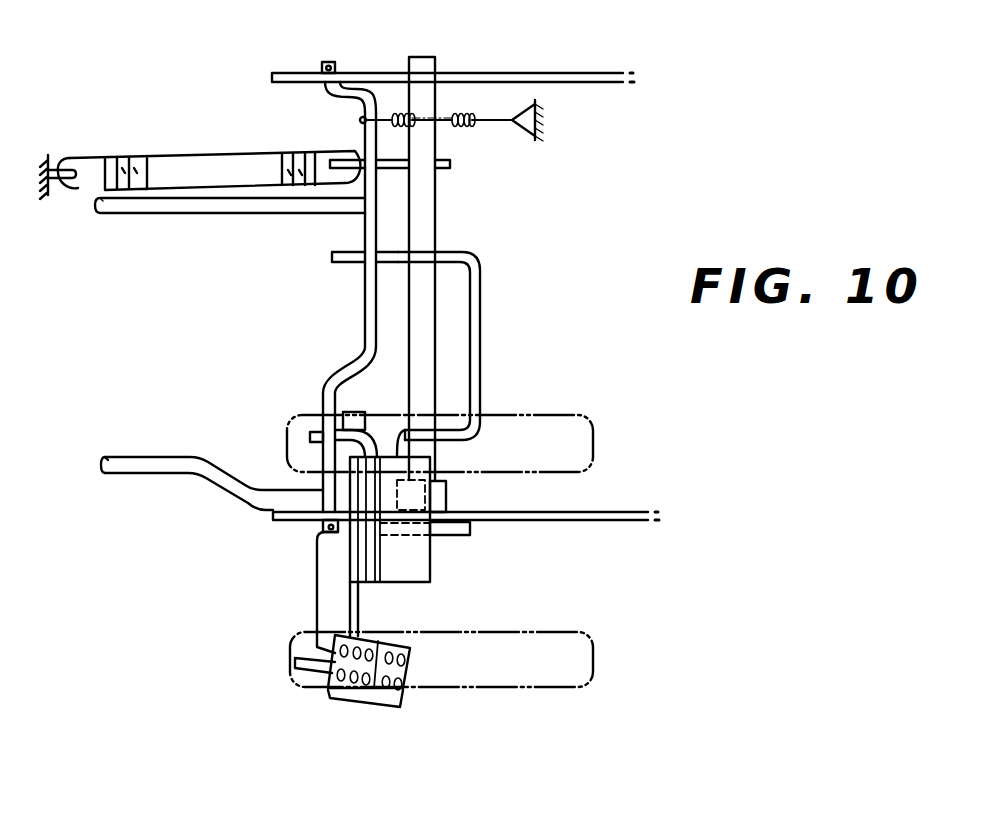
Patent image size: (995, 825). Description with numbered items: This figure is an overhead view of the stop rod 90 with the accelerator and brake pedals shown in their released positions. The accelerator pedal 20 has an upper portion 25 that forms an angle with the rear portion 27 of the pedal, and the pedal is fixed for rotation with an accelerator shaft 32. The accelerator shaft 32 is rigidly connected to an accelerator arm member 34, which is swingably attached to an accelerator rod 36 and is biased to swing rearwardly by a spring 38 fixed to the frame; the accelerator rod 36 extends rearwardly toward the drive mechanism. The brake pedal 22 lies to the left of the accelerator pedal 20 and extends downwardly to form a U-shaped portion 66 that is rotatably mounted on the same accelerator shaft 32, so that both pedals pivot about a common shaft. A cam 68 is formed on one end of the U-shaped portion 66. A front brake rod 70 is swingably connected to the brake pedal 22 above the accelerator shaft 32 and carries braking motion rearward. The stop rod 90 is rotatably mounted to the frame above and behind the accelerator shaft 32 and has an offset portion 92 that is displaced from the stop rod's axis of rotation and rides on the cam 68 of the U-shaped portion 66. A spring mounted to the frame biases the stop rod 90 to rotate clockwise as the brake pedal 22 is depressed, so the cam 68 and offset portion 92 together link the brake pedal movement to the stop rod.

The accelerator pedal 20 is at (322, 691).
The brake pedal 22 is at (430, 562).
The upper portion 25 is at (405, 668).
The rear portion 27 is at (335, 652).
The accelerator shaft 32 is at (413, 312).
The accelerator arm member 34 is at (343, 160).
The accelerator rod 36 is at (213, 213).
The spring 38 is at (147, 158).
The U-shaped portion 66 is at (477, 314).
The cam 68 is at (352, 254).
The front brake rod 70 is at (190, 457).
The stop rod 90 is at (323, 395).
The offset portion 92 is at (376, 226).